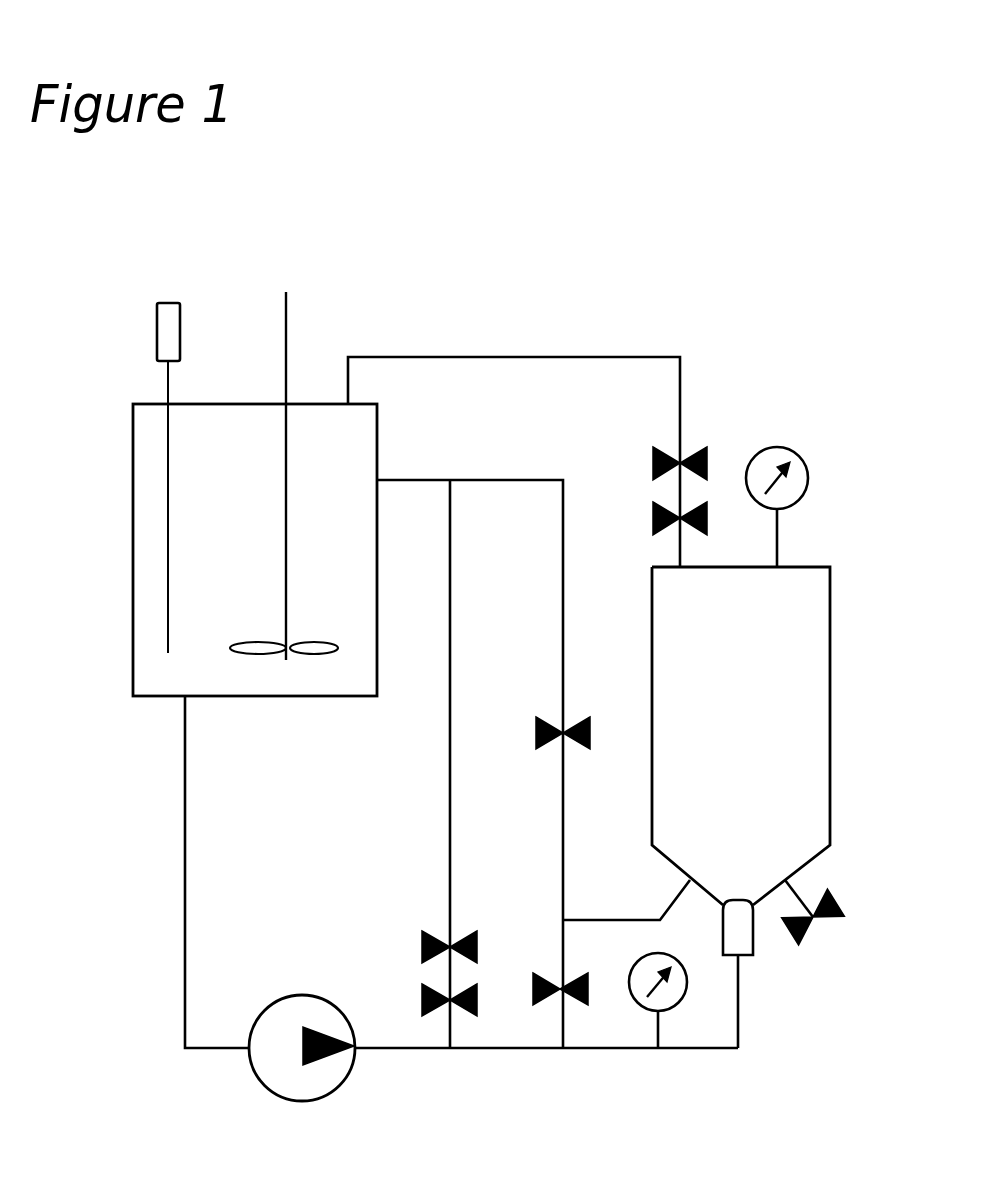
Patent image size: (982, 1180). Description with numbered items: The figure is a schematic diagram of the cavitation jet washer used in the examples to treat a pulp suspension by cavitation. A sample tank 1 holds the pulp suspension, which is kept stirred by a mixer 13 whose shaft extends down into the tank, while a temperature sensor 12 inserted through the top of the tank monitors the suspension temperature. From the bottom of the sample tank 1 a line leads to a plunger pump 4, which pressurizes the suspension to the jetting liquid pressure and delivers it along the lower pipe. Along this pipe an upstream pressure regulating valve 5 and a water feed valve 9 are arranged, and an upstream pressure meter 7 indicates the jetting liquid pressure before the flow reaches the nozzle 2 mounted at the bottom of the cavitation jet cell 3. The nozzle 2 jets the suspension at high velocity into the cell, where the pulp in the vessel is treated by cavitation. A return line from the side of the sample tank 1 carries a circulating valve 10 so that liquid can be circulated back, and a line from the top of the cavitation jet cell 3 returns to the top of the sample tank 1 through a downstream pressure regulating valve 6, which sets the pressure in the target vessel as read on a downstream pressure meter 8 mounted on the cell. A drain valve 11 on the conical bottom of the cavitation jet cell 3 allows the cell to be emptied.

The sample tank 1 is at (255, 550).
The nozzle 2 is at (752, 953).
The cavitation jet cell 3 is at (741, 736).
The plunger pump 4 is at (280, 1052).
The upstream pressure regulating valve 5 is at (426, 973).
The downstream pressure regulating valve 6 is at (658, 491).
The upstream pressure meter 7 is at (669, 1000).
The downstream pressure meter 8 is at (785, 507).
The water feed valve 9 is at (550, 975).
The circulating valve 10 is at (539, 711).
The drain valve 11 is at (842, 917).
The temperature sensor 12 is at (119, 478).
The mixer 13 is at (278, 476).